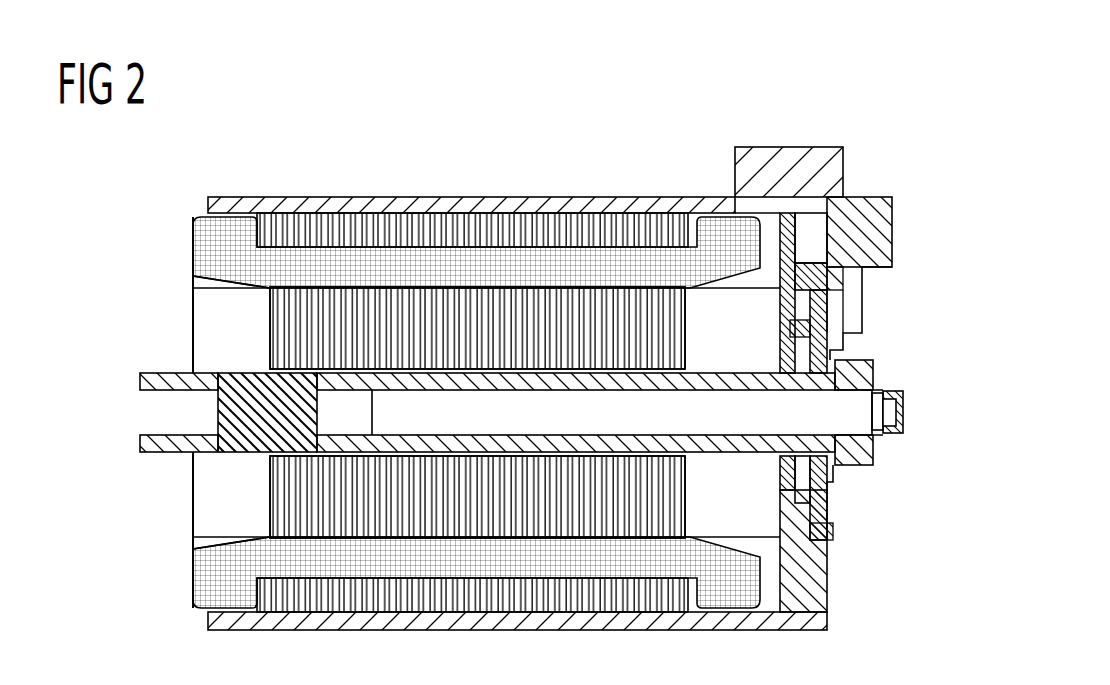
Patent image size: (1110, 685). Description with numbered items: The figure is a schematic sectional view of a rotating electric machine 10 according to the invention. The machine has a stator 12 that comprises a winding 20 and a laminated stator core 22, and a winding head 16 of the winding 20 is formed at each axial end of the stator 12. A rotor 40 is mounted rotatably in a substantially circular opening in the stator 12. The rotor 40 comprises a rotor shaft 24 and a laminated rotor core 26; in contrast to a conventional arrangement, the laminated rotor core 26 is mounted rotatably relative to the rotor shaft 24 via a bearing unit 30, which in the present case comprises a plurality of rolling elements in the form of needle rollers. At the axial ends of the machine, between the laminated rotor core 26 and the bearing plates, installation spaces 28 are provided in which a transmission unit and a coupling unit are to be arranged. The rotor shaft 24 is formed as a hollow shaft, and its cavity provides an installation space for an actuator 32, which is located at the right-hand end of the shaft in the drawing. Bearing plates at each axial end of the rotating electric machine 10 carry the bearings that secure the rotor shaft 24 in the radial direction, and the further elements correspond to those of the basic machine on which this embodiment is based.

The rotating electric machine 10 is at (906, 160).
The stator 12 is at (442, 363).
The winding head 16 is at (188, 236).
The winding 20 is at (545, 256).
The laminated stator core 22 is at (632, 222).
The rotor shaft 24 is at (150, 443).
The laminated rotor core 26 is at (292, 320).
The installation spaces 28 is at (203, 357).
The bearing unit 30 is at (273, 456).
The actuator 32 is at (845, 414).
The rotor 40 is at (159, 330).